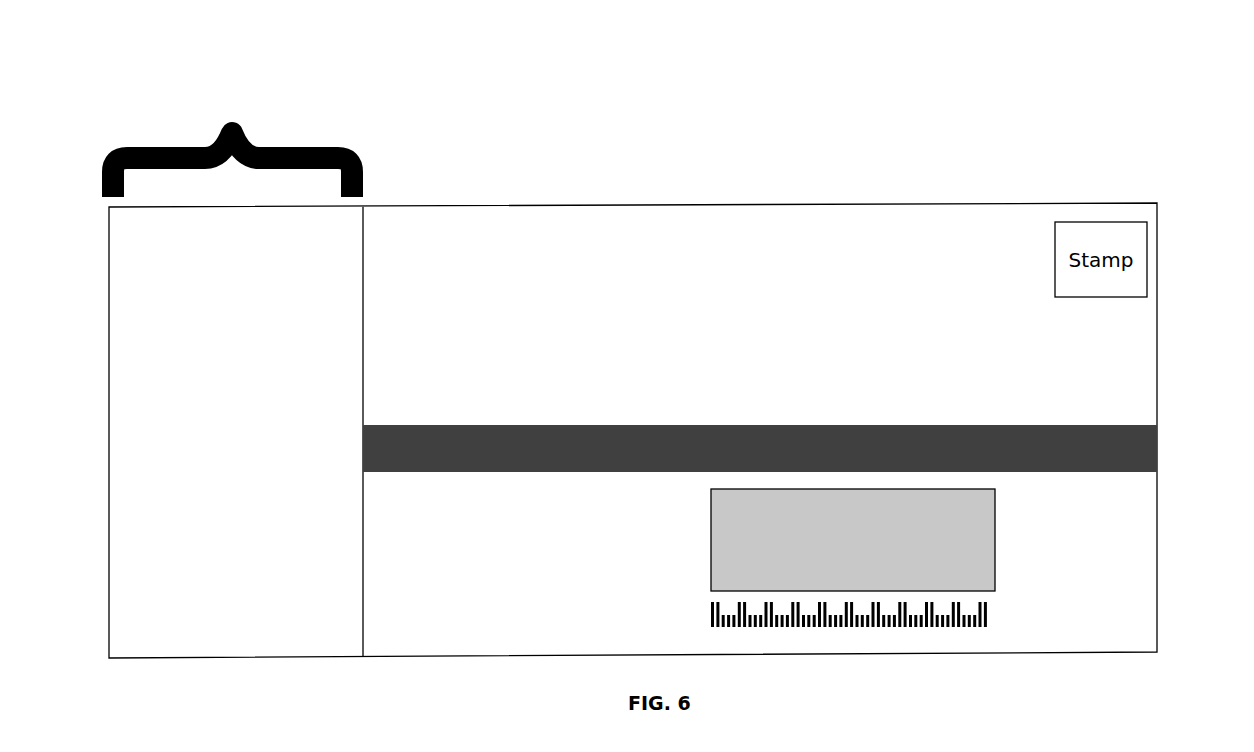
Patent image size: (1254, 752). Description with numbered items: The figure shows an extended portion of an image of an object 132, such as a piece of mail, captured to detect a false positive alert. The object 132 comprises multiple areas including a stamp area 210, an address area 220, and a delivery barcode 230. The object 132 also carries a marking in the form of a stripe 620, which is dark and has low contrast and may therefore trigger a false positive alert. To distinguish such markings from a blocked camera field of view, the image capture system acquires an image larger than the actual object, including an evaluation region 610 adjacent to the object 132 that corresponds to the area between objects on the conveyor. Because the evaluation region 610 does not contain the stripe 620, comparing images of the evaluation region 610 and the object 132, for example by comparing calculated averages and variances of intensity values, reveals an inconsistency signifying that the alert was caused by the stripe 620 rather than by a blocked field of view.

The object 132 is at (789, 98).
The stamp area 210 is at (1127, 220).
The address area 220 is at (997, 540).
The delivery barcode 230 is at (993, 615).
The evaluation region 610 is at (307, 140).
The stripe 620 is at (1133, 423).